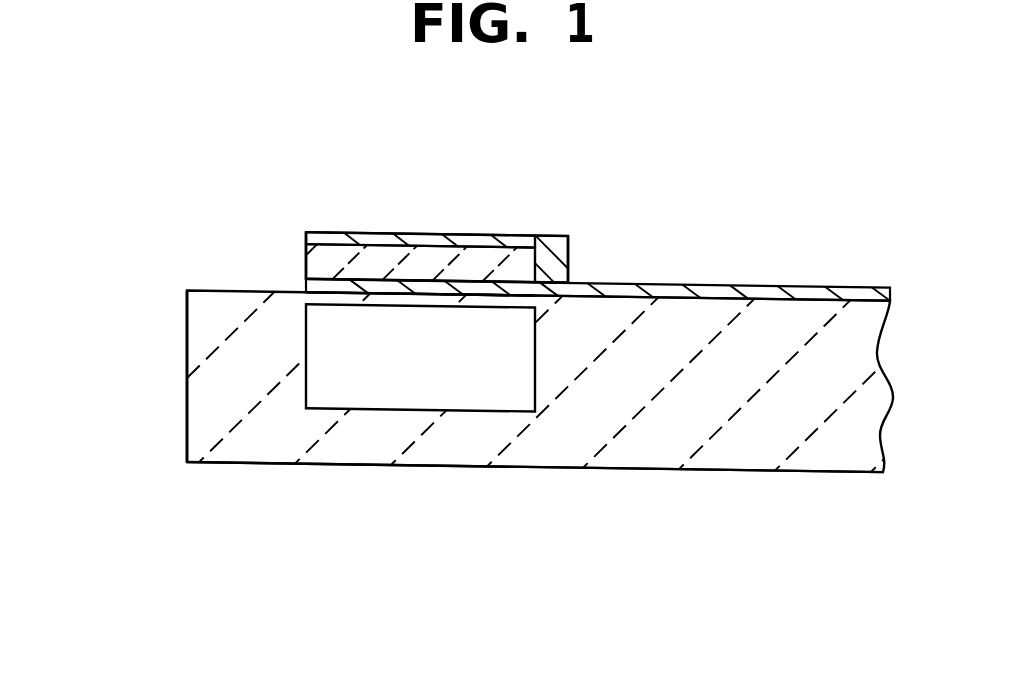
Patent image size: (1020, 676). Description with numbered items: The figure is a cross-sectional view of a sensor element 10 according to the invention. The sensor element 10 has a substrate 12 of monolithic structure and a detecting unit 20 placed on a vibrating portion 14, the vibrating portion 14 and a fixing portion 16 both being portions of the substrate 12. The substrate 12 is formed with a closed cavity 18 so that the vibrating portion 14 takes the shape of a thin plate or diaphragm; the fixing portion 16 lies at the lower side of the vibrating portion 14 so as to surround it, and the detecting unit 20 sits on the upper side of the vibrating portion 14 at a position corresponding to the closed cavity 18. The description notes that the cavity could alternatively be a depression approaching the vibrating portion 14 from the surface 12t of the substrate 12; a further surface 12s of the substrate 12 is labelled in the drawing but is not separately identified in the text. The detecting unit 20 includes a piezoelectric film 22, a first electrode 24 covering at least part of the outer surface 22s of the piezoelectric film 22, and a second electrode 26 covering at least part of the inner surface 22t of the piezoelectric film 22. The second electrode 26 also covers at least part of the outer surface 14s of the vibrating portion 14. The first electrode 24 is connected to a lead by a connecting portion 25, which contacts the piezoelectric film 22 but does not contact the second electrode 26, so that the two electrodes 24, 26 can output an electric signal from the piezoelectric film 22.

The sensor element 10 is at (125, 353).
The substrate 12 is at (280, 462).
The side surface of substrate 12s is at (205, 291).
The surface of the substrate 12t is at (328, 465).
The vibrating portion 14 is at (420, 300).
The outer surface of the vibrating portion 14s is at (466, 300).
The fixing portion 16 is at (213, 383).
The closed cavity 18 is at (503, 395).
The detecting unit 20 is at (250, 265).
The piezoelectric film 22 is at (317, 265).
The outer surface of the piezoelectric film 22s is at (346, 250).
The inner surface of the piezoelectric film 22t is at (336, 276).
The first electrode 24 is at (525, 243).
The connecting portion 25 is at (566, 249).
The second electrode 26 is at (690, 290).